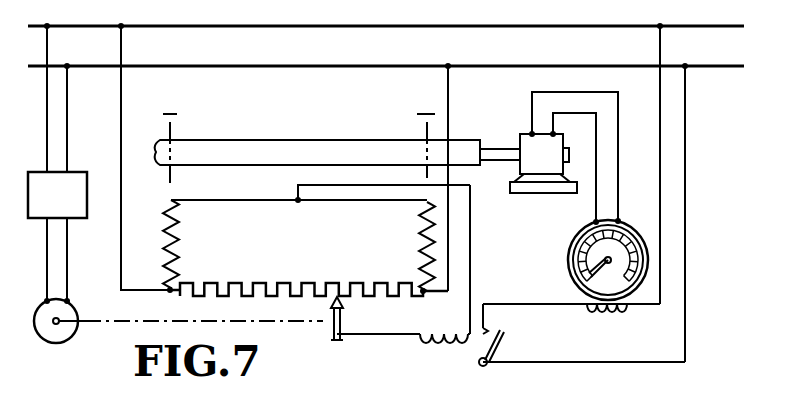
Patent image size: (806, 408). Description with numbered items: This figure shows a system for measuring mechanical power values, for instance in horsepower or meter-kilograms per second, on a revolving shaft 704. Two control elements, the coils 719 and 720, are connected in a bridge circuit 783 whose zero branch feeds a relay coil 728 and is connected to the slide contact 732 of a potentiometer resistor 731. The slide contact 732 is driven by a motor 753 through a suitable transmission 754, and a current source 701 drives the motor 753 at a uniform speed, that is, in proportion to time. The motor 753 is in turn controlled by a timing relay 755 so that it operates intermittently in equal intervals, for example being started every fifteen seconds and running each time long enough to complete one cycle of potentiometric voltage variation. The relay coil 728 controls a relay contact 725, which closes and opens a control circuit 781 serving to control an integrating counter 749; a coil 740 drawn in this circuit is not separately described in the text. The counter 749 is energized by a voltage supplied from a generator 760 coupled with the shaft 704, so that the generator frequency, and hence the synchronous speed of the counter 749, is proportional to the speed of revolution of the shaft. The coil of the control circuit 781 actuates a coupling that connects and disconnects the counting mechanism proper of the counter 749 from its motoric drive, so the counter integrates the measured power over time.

The current source 701 is at (289, 63).
The revolving shaft 704 is at (271, 150).
The control element coil 719 is at (174, 258).
The control element coil 720 is at (407, 248).
The relay contact 725 is at (504, 338).
The relay coil 728 is at (419, 346).
The potentiometer resistor 731 is at (298, 283).
The slide contact 732 is at (345, 316).
The coil 740 is at (610, 326).
The integrating counter 749 is at (567, 262).
The motor 753 is at (68, 312).
The transmission 754 is at (152, 315).
The timing relay 755 is at (78, 173).
The generator 760 is at (531, 147).
The control circuit 781 is at (555, 304).
The bridge circuit 783 is at (277, 203).